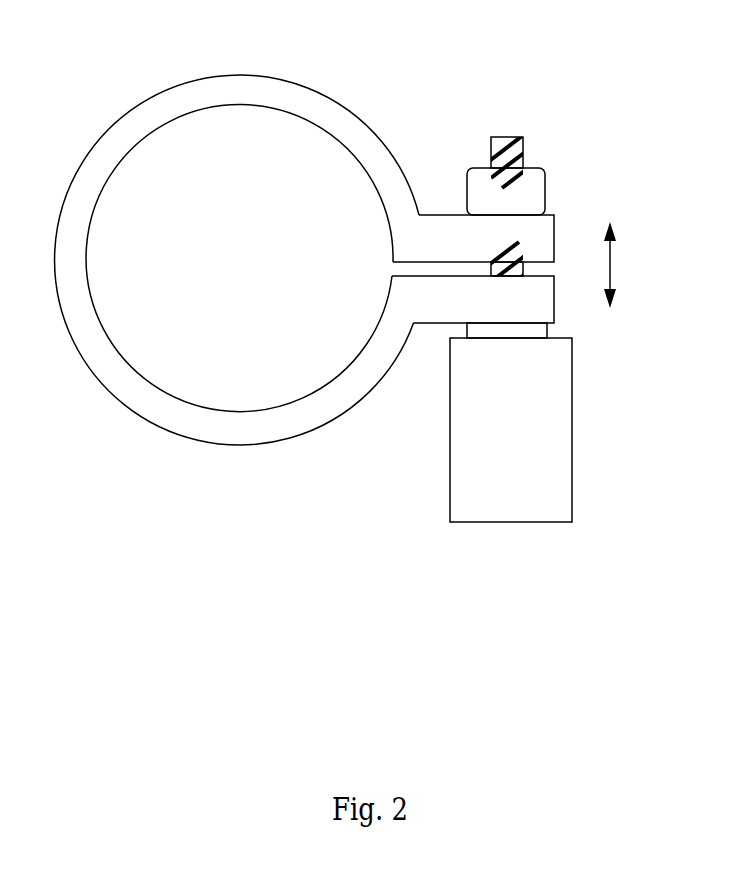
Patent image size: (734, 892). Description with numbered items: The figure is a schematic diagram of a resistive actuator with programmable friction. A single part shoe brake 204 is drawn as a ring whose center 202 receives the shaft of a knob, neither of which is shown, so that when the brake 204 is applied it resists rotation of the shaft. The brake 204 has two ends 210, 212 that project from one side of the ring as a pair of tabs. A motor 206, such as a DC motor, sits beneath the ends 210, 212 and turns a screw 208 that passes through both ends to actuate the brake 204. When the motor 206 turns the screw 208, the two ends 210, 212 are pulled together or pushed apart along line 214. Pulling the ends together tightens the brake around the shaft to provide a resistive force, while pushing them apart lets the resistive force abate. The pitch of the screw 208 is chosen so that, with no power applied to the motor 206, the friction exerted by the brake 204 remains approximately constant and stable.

The center 202 is at (277, 168).
The single part shoe brake 204 is at (107, 127).
The motor 206 is at (573, 428).
The screw 208 is at (506, 136).
The end 210 is at (556, 238).
The end 212 is at (556, 298).
The line 214 is at (632, 265).